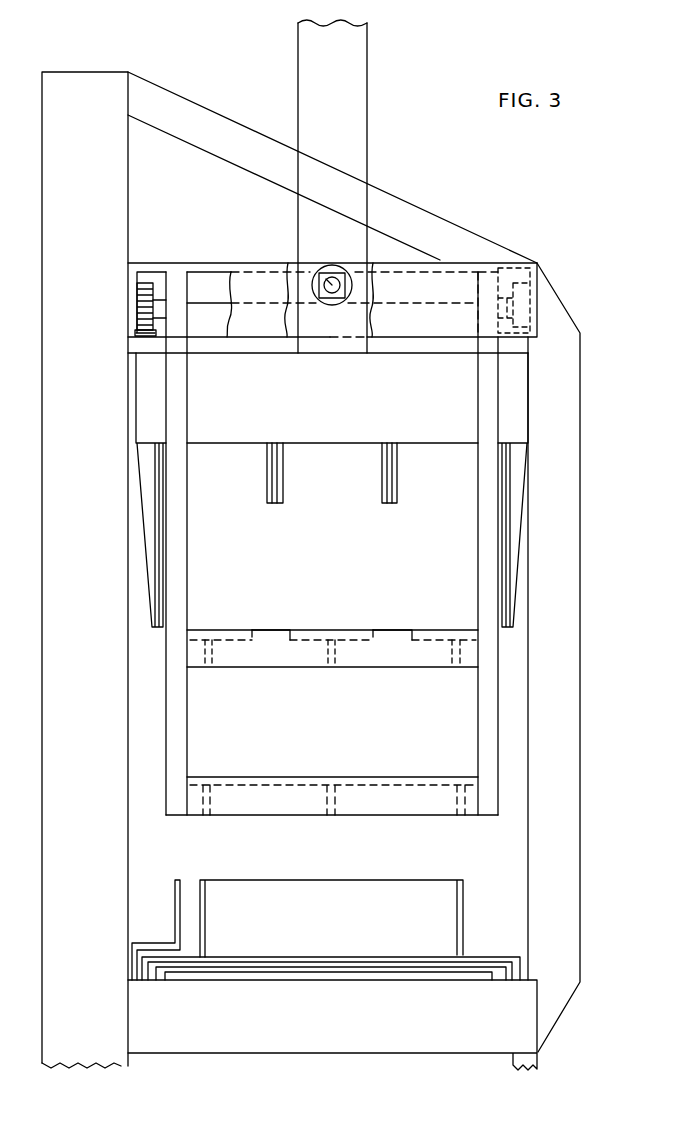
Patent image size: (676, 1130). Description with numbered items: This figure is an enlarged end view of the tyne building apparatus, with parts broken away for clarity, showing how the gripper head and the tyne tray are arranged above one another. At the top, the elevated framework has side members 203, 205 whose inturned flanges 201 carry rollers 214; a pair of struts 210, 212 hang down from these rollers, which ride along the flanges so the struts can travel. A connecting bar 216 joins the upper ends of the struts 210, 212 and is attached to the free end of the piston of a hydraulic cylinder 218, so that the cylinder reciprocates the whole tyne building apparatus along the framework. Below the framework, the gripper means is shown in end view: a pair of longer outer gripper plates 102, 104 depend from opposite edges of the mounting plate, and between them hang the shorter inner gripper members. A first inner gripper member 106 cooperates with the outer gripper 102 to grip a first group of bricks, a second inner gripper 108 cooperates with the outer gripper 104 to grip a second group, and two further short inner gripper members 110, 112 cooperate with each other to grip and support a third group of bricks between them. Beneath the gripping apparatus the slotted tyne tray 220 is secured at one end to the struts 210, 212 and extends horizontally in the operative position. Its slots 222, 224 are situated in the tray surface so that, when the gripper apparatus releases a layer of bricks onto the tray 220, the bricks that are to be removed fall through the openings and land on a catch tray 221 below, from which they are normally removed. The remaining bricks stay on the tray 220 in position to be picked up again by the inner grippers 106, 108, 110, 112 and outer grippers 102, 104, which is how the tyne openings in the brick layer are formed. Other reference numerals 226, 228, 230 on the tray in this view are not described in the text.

The outer gripper plate 102 is at (517, 500).
The outer gripper plate 104 is at (147, 465).
The first inner gripper member 106 is at (398, 478).
The second inner gripper 108 is at (269, 483).
The inner gripper member 110 is at (386, 490).
The inner gripper member 112 is at (281, 465).
The inturned flanges 201 is at (140, 338).
The side member 203 is at (136, 270).
The side member 205 is at (533, 305).
The strut 210 is at (177, 537).
The strut 212 is at (490, 538).
The rollers 214 is at (143, 300).
The connecting bar 216 is at (205, 292).
The hydraulic cylinder 218 is at (316, 268).
The slotted tyne tray 220 is at (332, 653).
The catch tray 221 is at (236, 777).
The slot 222 is at (253, 633).
The slot 224 is at (377, 633).
The shelf segment 226 is at (197, 632).
The shelf segment 228 is at (347, 632).
The shelf segment 230 is at (467, 632).